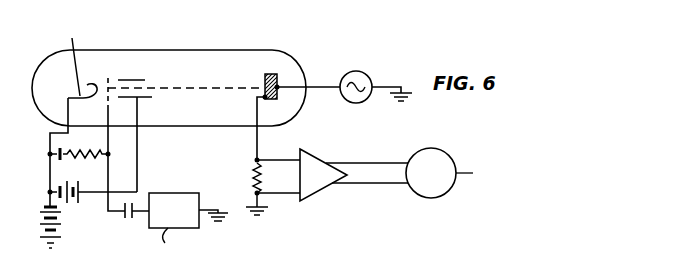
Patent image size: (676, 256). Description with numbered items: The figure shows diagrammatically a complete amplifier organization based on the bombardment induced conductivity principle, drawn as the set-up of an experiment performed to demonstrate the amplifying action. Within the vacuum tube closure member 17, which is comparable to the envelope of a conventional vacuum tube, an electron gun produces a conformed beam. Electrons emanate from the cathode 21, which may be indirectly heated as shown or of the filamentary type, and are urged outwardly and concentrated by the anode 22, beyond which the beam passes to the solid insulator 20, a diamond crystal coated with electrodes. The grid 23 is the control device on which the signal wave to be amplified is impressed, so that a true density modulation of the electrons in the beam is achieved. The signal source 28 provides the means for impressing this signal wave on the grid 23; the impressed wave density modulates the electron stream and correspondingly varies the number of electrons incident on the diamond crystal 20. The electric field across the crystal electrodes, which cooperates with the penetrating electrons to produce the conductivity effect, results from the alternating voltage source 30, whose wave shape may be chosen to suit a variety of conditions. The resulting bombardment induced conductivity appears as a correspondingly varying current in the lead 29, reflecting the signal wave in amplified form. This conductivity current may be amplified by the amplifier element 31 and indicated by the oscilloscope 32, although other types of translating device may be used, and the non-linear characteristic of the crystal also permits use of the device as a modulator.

The vacuum tube closure member 17 is at (224, 50).
The solid insulator 20 is at (271, 74).
The cathode 21 is at (75, 62).
The anode 22 is at (143, 80).
The grid 23 is at (108, 78).
The signal source 28 is at (167, 193).
The lead 29 is at (257, 138).
The alternating voltage source 30 is at (364, 75).
The amplifier element 31 is at (308, 153).
The oscilloscope 32 is at (435, 148).